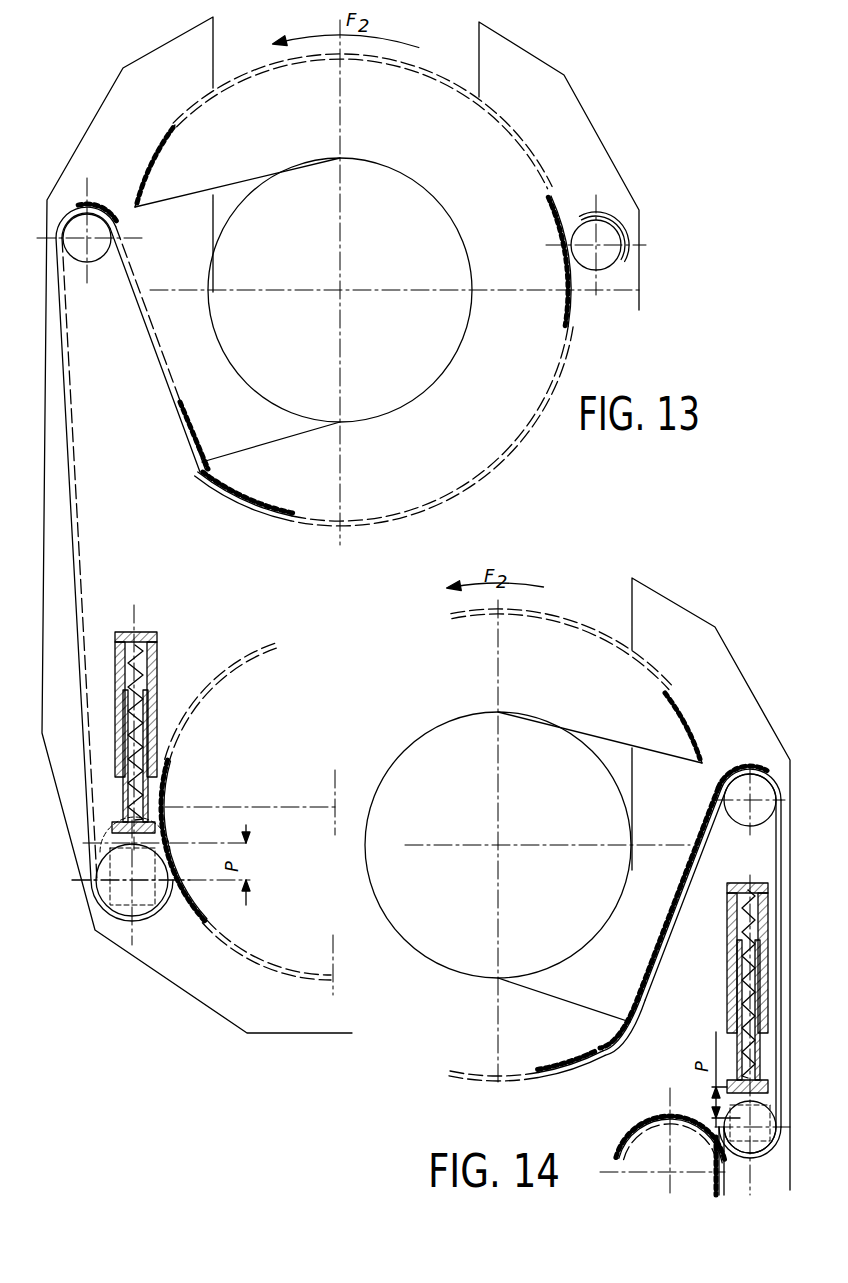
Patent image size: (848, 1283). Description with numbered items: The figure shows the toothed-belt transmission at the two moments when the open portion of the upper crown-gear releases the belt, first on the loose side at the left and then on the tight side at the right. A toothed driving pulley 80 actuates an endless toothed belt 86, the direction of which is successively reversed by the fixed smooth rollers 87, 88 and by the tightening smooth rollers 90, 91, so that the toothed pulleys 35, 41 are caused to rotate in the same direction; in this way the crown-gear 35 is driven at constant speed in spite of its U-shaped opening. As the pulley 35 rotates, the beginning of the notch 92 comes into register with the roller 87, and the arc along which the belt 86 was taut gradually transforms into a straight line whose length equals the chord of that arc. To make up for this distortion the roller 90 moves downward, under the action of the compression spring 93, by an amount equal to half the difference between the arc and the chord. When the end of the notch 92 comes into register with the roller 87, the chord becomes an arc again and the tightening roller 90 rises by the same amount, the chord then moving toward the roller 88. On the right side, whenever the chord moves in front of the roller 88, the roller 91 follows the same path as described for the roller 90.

In FIG. 13, the toothed pulley 35 is at (165, 152).
In FIG. 14, the toothed pulley 35 is at (665, 712).
In FIG. 13, the toothed pulley 41 is at (215, 905).
In FIG. 14, the toothed driving pulley 80 is at (655, 1133).
In FIG. 13, the endless toothed belt 86 is at (178, 412).
In FIG. 14, the endless toothed belt 86 is at (700, 838).
In FIG. 13, the fixed smooth roller 87 is at (75, 222).
In FIG. 13, the fixed smooth roller 88 is at (610, 232).
In FIG. 14, the fixed smooth roller 88 is at (740, 785).
In FIG. 13, the tightening smooth roller 90 is at (120, 897).
In FIG. 14, the tightening smooth roller 91 is at (752, 1145).
In FIG. 13, the notch 92 is at (237, 218).
In FIG. 13, the compression spring 93 is at (148, 670).